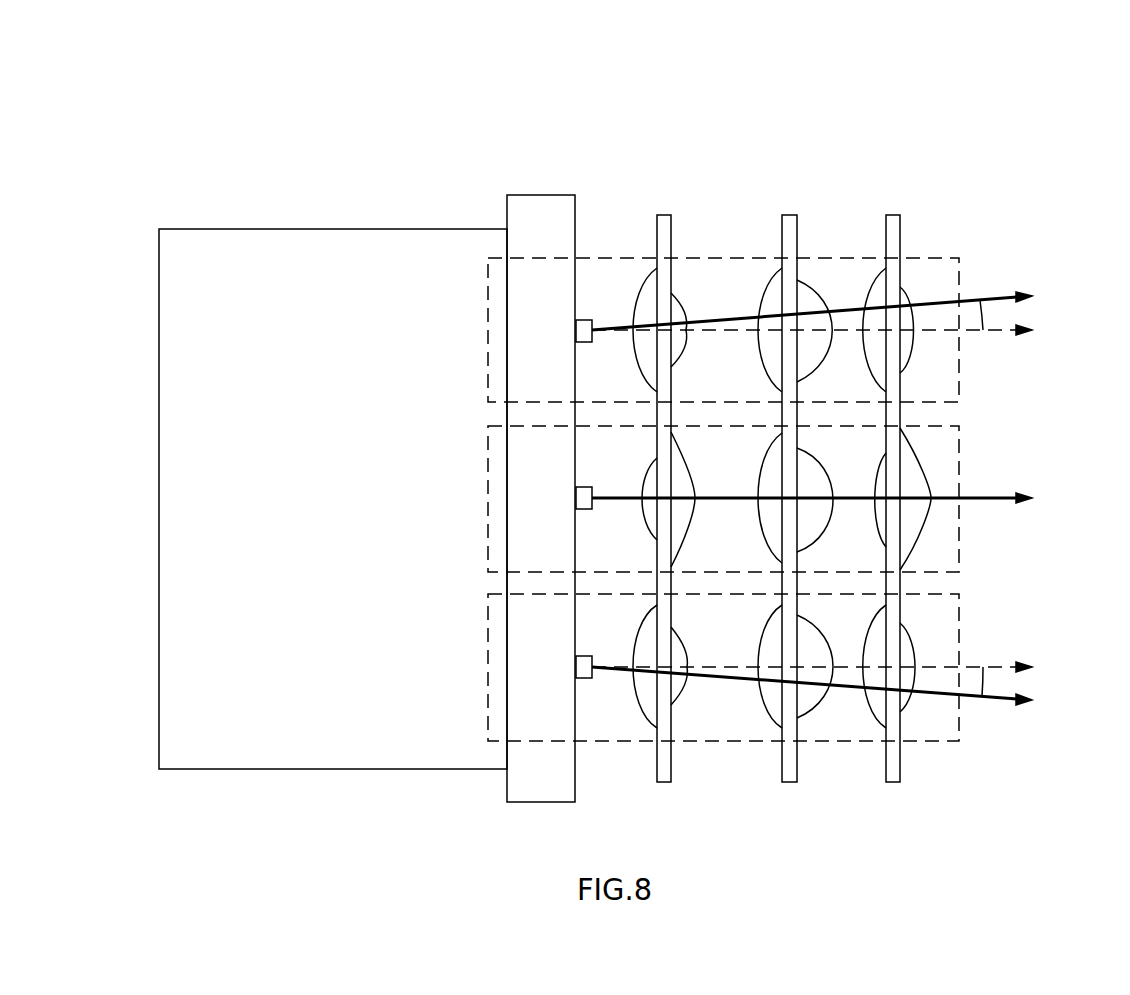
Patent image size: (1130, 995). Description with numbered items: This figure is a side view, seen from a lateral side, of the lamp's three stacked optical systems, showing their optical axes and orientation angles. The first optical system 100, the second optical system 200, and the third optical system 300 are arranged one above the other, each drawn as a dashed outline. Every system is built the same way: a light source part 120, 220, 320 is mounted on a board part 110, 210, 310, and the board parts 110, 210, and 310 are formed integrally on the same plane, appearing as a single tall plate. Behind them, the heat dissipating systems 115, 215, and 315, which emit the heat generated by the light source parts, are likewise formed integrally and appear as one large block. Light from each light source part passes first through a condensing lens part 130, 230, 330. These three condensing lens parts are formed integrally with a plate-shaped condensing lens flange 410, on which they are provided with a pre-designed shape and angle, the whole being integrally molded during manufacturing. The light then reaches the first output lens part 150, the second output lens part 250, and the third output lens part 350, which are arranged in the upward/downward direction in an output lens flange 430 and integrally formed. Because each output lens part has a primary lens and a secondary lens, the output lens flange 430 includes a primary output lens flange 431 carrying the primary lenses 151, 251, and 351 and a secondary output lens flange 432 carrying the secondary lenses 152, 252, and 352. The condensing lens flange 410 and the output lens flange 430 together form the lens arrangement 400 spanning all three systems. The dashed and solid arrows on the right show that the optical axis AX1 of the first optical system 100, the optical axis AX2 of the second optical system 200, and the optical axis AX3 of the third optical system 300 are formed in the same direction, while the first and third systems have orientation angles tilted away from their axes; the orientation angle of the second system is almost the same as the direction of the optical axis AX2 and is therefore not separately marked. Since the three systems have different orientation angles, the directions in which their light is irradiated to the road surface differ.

The first optical system 100 is at (450, 717).
The board part 110 is at (538, 462).
The heat dissipating system 115 is at (333, 466).
The light source part 120 is at (576, 667).
The condensing lens part 130 is at (652, 633).
The first output lens part 150 is at (1035, 780).
The (1-1)-th lens 151 is at (808, 692).
The (1-2)-th lens 152 is at (903, 698).
The second optical system 200 is at (450, 548).
The board part 210 is at (538, 462).
The heat dissipating system 215 is at (333, 466).
The light source part 220 is at (576, 498).
The condensing lens part 230 is at (652, 480).
The second output lens part 250 is at (1072, 540).
The (2-1)-th lens 251 is at (808, 523).
The (2-2)-th lens 252 is at (912, 518).
The third optical system 300 is at (450, 380).
The board part 310 is at (542, 217).
The heat dissipating system 315 is at (249, 250).
The light source part 320 is at (576, 331).
The condensing lens part 330 is at (652, 296).
The third output lens part 350 is at (1072, 370).
The (3-1)-th lens 351 is at (808, 353).
The (3-2)-th lens 352 is at (907, 348).
The lens array 400 is at (952, 0).
The condensing lens flange 410 is at (660, 228).
The output lens flange 430 is at (915, 152).
The primary output lens flange 431 is at (787, 228).
The secondary output lens flange 432 is at (893, 228).
The optical axis AX1 is at (838, 667).
The optical axis AX2 is at (838, 498).
The optical axis AX3 is at (838, 330).